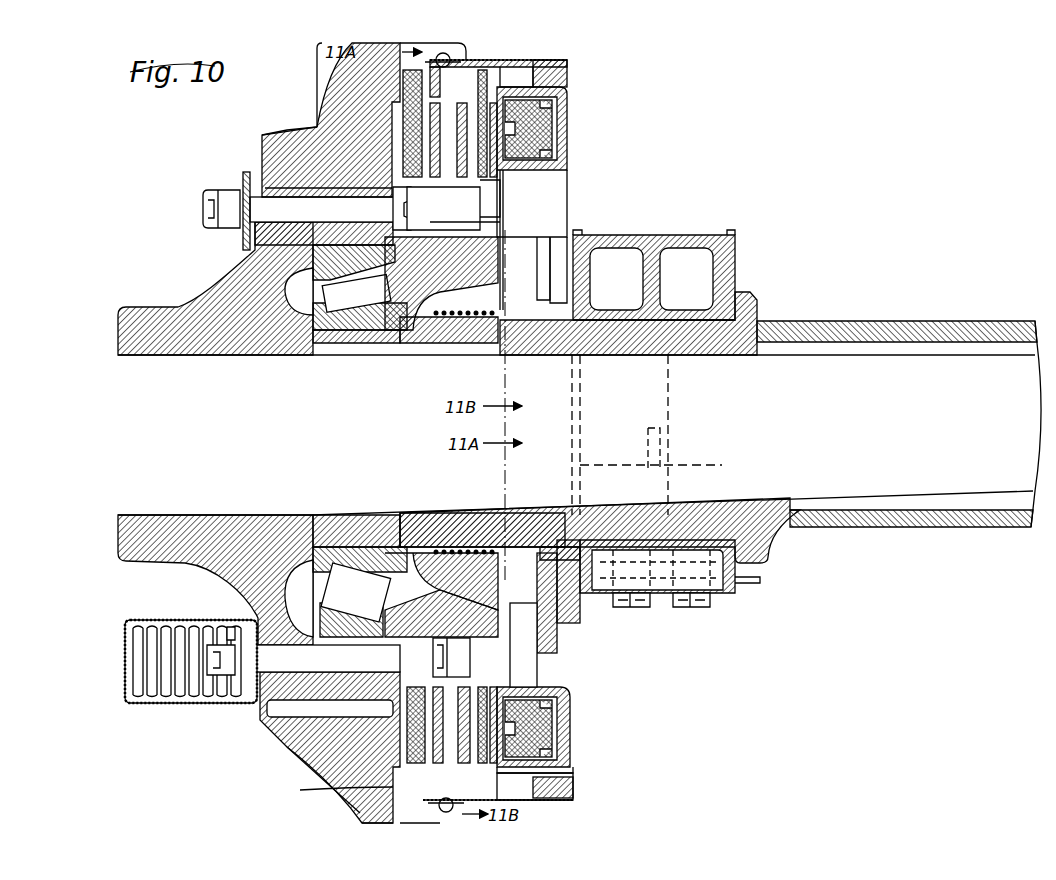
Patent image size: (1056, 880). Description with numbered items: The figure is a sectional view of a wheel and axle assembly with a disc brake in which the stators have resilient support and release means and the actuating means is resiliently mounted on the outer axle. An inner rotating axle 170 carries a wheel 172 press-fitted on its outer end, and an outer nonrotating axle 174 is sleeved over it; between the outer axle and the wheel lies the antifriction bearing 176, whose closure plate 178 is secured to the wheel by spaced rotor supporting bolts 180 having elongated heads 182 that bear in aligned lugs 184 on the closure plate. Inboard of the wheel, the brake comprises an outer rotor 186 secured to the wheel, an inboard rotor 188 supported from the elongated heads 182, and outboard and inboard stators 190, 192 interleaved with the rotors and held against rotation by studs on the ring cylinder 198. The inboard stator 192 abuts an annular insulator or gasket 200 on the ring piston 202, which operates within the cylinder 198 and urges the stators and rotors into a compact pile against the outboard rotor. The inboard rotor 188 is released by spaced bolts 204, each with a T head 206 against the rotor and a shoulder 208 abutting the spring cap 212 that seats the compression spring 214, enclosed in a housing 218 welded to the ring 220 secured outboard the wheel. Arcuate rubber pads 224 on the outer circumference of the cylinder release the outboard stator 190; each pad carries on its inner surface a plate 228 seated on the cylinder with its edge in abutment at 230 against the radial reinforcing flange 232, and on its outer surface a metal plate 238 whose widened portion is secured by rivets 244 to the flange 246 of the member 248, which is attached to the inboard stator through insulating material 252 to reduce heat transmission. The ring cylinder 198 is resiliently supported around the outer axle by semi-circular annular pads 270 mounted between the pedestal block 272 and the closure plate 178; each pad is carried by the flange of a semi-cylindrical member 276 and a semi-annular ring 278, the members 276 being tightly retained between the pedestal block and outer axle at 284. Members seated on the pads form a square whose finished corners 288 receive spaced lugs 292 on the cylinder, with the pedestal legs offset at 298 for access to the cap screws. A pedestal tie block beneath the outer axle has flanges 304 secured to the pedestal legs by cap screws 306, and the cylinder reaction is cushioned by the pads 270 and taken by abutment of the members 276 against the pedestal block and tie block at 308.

The inner rotating axle 170 is at (893, 404).
The wheel 172 is at (185, 306).
The outer nonrotating axle 174 is at (907, 328).
The antifriction bearing 176 is at (337, 335).
The closure plate 178 is at (500, 303).
The rotor supporting bolts 180 is at (267, 207).
The elongated heads 182 is at (482, 224).
The lugs 184 is at (500, 182).
The outer rotor 186 is at (370, 112).
The inboard rotor 188 is at (462, 102).
The outboard stator 190 is at (377, 96).
The inboard stator 192 is at (482, 68).
The ring cylinder 198 is at (567, 97).
The annular insulator or gasket 200 is at (517, 78).
The ring piston 202 is at (540, 135).
The bolts 204 is at (283, 658).
The T head 206 is at (447, 668).
The shoulder 208 is at (230, 628).
The spring cap 212 is at (218, 700).
The compression spring 214 is at (170, 705).
The housing 218 is at (135, 705).
The ring 220 is at (246, 178).
The arcuate pads 224 is at (568, 76).
The plate 228 is at (570, 760).
The abutment 230 is at (570, 738).
The radial reinforcing flange 232 is at (575, 800).
The metal plate 238 is at (575, 790).
The rivets 244 is at (450, 57).
The flange 246 is at (432, 812).
The member 248 is at (400, 815).
The insulating material 252 is at (331, 788).
The semi-circular annular pads 270 is at (565, 237).
The pedestal block or load carrying member 272 is at (737, 238).
The semi-cylindrical member 276 is at (587, 537).
The semi-annular ring 278 is at (510, 523).
The retention location 284 is at (628, 325).
The corners 288 is at (547, 243).
The lugs 292 is at (532, 645).
The offset 298 is at (627, 609).
The flanges 304 is at (766, 581).
The cap screws 306 is at (692, 608).
The abutment 308 is at (556, 535).